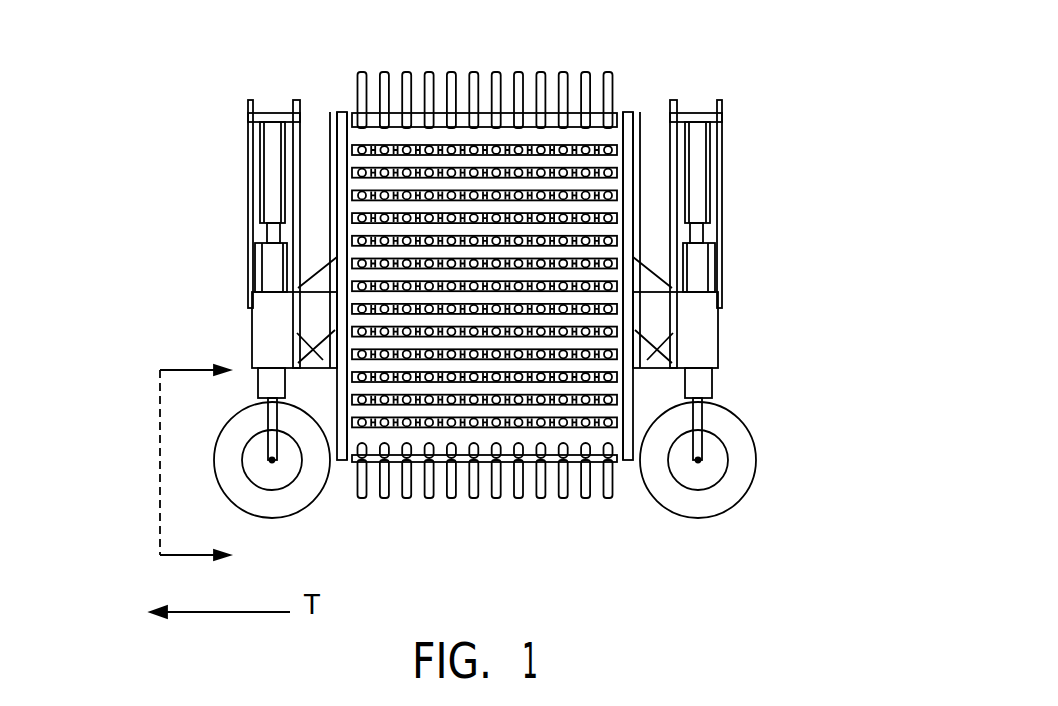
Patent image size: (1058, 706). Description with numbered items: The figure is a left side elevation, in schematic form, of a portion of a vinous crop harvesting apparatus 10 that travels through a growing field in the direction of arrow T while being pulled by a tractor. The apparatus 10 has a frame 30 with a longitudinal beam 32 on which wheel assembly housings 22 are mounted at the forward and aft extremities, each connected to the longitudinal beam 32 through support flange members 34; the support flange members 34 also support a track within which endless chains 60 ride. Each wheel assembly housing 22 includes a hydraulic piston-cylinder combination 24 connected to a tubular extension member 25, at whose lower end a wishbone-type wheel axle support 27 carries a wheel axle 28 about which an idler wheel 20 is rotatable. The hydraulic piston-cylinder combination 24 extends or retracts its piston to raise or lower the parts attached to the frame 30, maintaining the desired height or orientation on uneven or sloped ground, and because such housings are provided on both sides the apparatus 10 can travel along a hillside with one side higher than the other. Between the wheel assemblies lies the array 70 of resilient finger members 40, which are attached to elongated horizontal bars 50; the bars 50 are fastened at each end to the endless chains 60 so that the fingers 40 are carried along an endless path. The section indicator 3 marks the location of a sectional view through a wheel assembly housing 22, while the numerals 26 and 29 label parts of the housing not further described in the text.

The vinous crop harvesting apparatus 10 is at (180, 193).
The wheel 20 is at (237, 488).
The wheel assembly housing 22 is at (228, 290).
The hydraulic piston-cylinder combination 24 is at (277, 168).
The tubular extension member 25 is at (267, 254).
The support post 26 is at (697, 313).
The wishbone-type wheel axle support 27 is at (268, 452).
The wheel axle 28 is at (265, 462).
The top cross bar 29 is at (247, 140).
The frame 30 is at (300, 322).
The longitudinal beam 32 is at (330, 112).
The support flange member 34 is at (322, 358).
The resilient finger member 40 is at (608, 72).
The elongated horizontal bar 50 is at (360, 218).
The endless chain 60 is at (343, 113).
The array of resilient finger members 70 is at (548, 403).
The section line 3- 3 is at (195, 462).